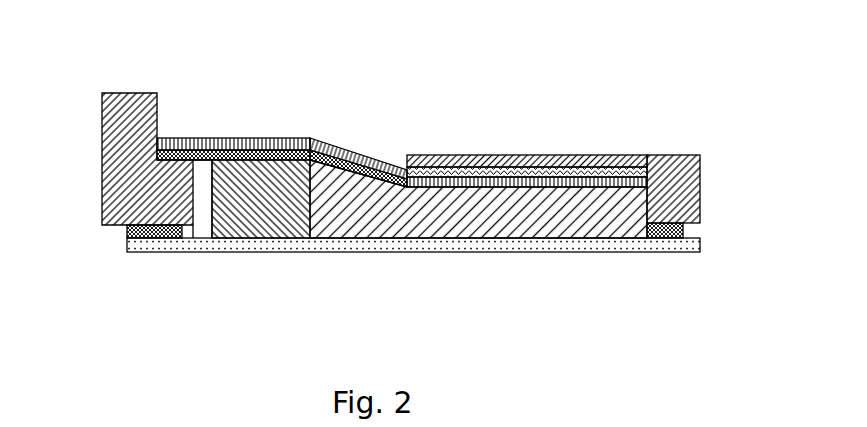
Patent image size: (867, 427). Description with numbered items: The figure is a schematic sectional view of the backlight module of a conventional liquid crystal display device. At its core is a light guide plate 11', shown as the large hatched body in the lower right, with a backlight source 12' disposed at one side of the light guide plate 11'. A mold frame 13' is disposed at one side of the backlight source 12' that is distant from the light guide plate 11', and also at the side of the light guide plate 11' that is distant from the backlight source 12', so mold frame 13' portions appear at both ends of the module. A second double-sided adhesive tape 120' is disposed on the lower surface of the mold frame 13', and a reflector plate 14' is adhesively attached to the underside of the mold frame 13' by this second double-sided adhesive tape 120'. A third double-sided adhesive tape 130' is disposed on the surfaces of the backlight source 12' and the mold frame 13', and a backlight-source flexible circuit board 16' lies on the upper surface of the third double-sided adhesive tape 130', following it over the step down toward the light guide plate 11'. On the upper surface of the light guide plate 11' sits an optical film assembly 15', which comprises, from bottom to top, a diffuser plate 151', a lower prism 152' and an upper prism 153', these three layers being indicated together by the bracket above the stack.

The light guide plate 11' is at (478, 238).
The backlight source 12' is at (281, 233).
The mold frame 13' is at (402, 159).
The reflector plate 14' is at (211, 238).
The optical film assembly 15' is at (530, 98).
The backlight-source flexible circuit board 16' is at (233, 126).
The second double-sided adhesive tape 120' is at (447, 241).
The third double-sided adhesive tape 130' is at (365, 130).
The diffuser plate 151' is at (527, 140).
The lower prism 152' is at (527, 135).
The upper prism 153' is at (527, 129).